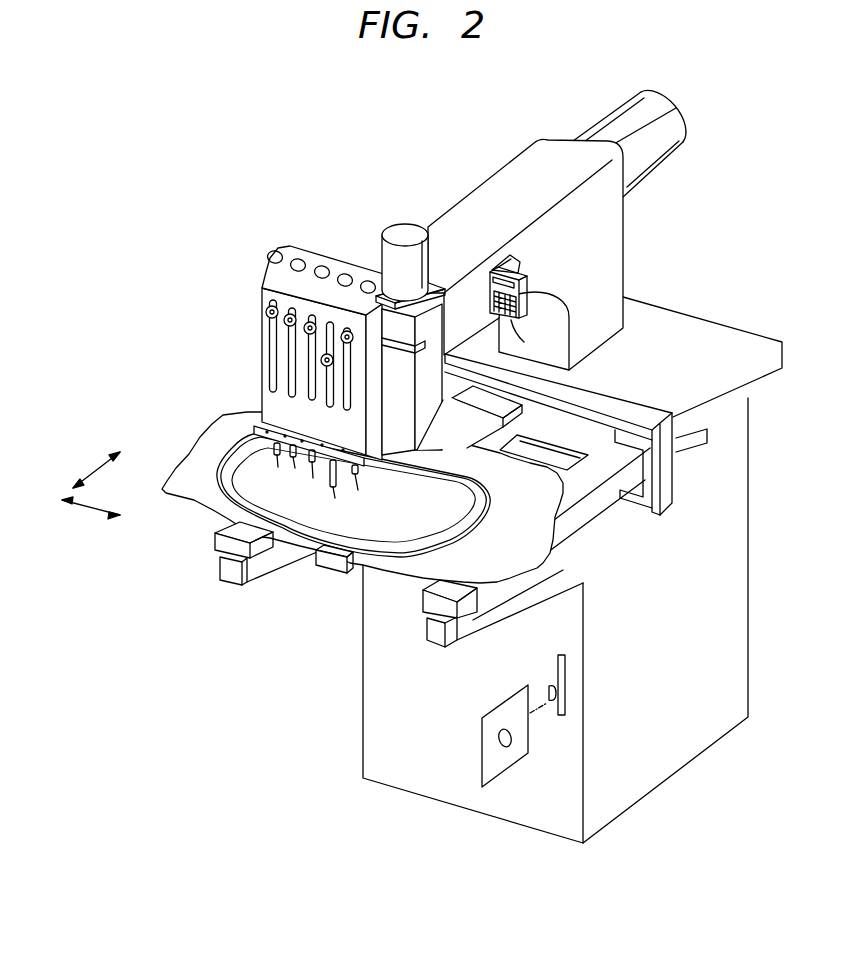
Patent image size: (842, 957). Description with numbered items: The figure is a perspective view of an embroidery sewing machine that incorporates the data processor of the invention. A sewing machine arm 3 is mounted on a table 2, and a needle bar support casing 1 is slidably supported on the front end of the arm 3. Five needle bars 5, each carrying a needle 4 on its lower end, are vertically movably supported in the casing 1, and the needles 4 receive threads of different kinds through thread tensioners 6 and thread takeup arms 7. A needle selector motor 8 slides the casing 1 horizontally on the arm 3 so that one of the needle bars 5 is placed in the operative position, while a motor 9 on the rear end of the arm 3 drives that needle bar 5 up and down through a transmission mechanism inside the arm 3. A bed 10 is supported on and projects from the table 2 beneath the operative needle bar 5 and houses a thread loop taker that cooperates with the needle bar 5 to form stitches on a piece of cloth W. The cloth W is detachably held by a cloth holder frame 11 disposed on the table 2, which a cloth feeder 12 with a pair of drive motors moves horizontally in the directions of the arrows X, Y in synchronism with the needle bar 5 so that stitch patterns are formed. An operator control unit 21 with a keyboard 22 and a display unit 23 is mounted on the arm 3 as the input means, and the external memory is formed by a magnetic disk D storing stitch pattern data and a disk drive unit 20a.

The needle bar support casing 1 is at (263, 363).
The table 2 is at (690, 323).
The sewing machine arm 3 is at (480, 192).
The needle 4 is at (312, 465).
The needle bar 5 is at (337, 470).
The thread tensioner 6 is at (345, 271).
The thread takeup arm 7 is at (265, 312).
The needle selector motor 8 is at (407, 228).
The motor 9 is at (623, 127).
The bed 10 is at (333, 573).
The cloth holder frame 11 is at (488, 515).
The cloth feeder 12 is at (639, 398).
The disk drive unit 20a is at (565, 688).
The operator control unit 21 is at (528, 283).
The keyboard 22 is at (533, 338).
The display unit 23 is at (515, 264).
The piece of cloth W is at (205, 443).
The magnetic disk D is at (500, 710).
The arrow X is at (87, 508).
The arrow Y is at (97, 464).